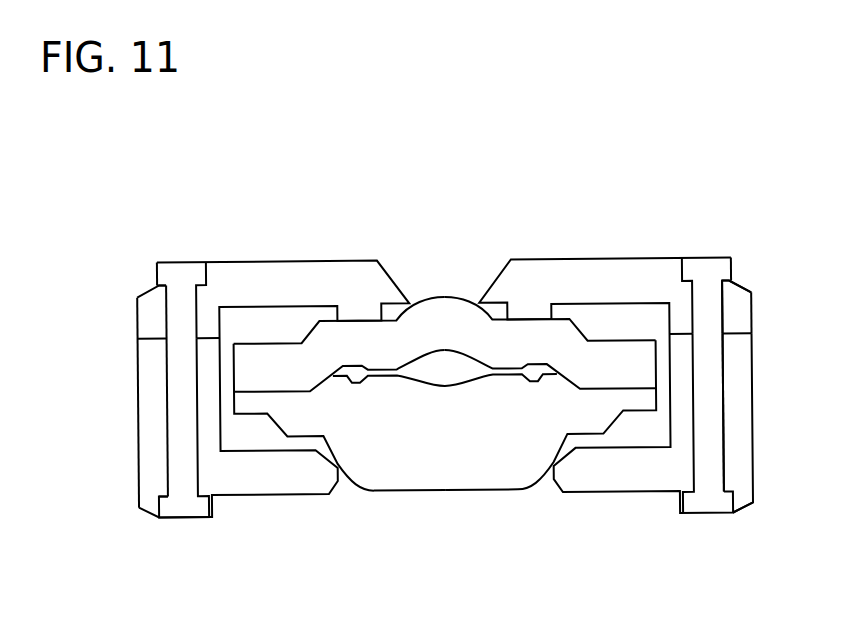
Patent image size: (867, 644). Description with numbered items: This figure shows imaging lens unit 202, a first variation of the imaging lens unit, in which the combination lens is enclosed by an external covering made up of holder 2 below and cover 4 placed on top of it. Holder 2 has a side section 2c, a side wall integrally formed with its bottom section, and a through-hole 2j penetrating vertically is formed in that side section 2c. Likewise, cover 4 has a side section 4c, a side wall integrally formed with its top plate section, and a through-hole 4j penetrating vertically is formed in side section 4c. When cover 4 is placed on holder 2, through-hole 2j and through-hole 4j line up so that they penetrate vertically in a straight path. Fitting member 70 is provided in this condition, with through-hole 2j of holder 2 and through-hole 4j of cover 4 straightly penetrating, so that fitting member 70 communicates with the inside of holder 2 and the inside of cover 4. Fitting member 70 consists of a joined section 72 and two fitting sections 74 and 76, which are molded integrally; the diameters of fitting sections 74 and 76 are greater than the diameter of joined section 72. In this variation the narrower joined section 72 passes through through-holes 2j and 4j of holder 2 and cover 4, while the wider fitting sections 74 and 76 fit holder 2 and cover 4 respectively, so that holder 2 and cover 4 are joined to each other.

The imaging lens unit 202 is at (473, 161).
The holder 2 is at (786, 338).
The side section 2c is at (740, 497).
The through-hole 2j is at (723, 455).
The cover 4 is at (786, 256).
The side section 4c is at (738, 283).
The through-hole 4j is at (722, 317).
The fitting member 70 is at (63, 268).
The joined section 72 is at (178, 405).
The fitting section 74 is at (190, 510).
The fitting section 76 is at (173, 273).